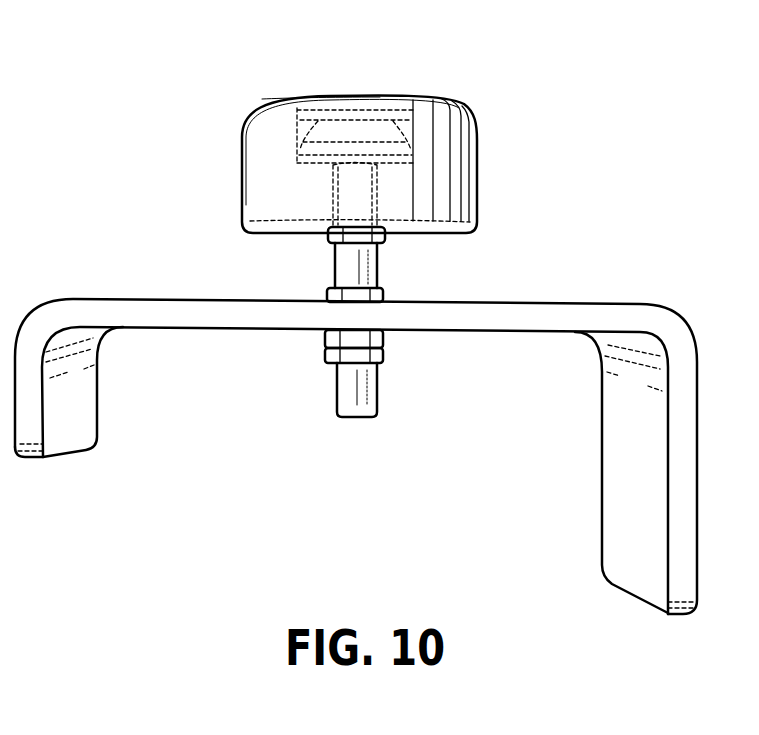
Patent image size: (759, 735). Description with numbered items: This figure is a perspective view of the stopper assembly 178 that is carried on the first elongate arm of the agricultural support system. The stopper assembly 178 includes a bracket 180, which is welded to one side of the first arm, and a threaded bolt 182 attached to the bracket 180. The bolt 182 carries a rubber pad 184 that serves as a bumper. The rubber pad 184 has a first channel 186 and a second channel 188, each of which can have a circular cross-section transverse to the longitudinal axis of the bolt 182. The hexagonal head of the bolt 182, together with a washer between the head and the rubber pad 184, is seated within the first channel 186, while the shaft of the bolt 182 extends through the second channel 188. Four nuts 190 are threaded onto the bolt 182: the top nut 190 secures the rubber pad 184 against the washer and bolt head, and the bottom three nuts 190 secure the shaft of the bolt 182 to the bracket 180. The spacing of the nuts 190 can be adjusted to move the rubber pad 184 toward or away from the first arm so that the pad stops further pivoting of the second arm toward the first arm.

The stopper assembly 178 is at (171, 74).
The bracket 180 is at (157, 318).
The threaded bolt 182 is at (348, 112).
The rubber pad 184 is at (243, 133).
The first channel 186 is at (290, 96).
The second channel 188 is at (327, 203).
The nuts 190 is at (384, 296).